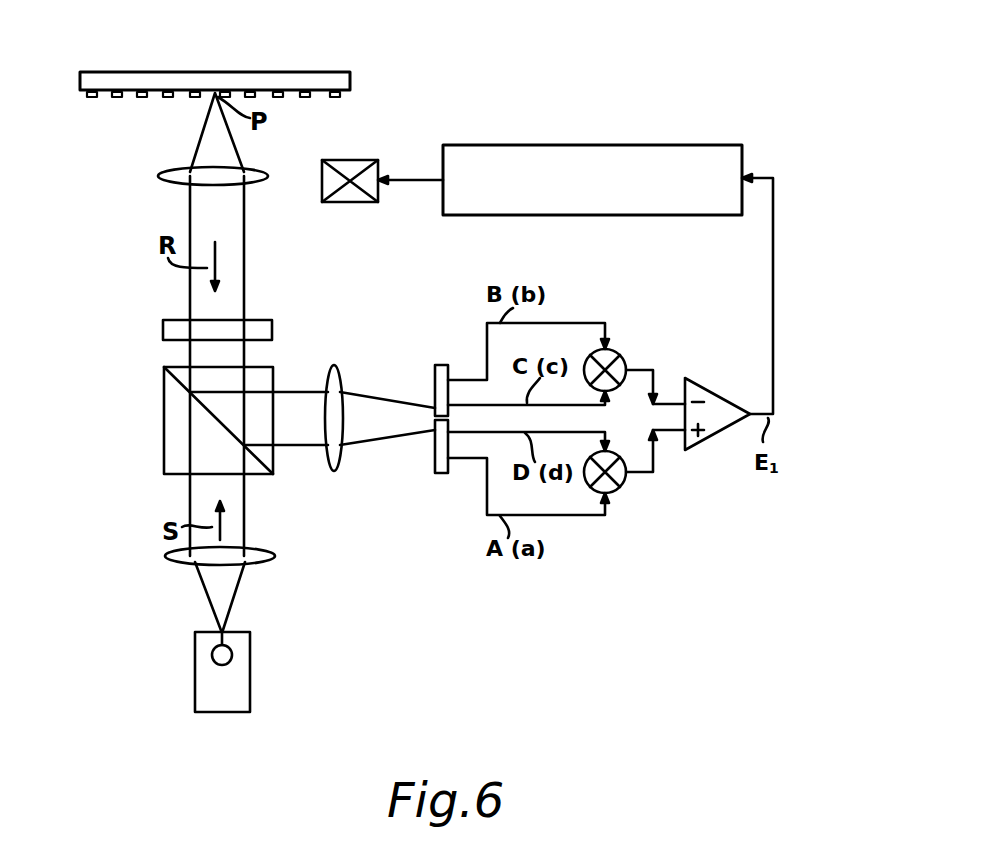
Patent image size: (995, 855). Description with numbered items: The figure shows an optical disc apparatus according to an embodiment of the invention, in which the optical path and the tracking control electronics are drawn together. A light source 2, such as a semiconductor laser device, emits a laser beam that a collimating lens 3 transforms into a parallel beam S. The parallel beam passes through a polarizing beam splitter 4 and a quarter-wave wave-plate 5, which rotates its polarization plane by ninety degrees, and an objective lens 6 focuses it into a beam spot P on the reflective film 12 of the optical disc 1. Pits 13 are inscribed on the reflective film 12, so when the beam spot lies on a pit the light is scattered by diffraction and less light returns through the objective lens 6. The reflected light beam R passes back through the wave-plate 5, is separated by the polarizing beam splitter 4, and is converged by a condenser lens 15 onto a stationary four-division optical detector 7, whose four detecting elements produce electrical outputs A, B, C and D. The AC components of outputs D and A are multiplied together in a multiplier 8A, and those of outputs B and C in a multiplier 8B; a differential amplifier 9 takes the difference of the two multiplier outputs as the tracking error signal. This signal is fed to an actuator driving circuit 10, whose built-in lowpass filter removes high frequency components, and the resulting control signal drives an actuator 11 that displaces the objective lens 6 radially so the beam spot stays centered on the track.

The optical disc 1 is at (273, 72).
The light source 2 is at (243, 648).
The collimating lens 3 is at (268, 566).
The polarizing beam splitter 4 is at (163, 387).
The 1/4 wave-plate 5 is at (275, 330).
The objective lens 6 is at (165, 176).
The 4-division optical detector 7 is at (437, 470).
The multiplier 8A is at (625, 482).
The multiplier 8B is at (617, 356).
The differential amplifier 9 is at (724, 395).
The actuator driving circuit 10 is at (573, 145).
The actuator 11 is at (352, 203).
The reflective film 12 is at (82, 97).
The pits 13 is at (295, 96).
The condenser lens 15 is at (340, 375).